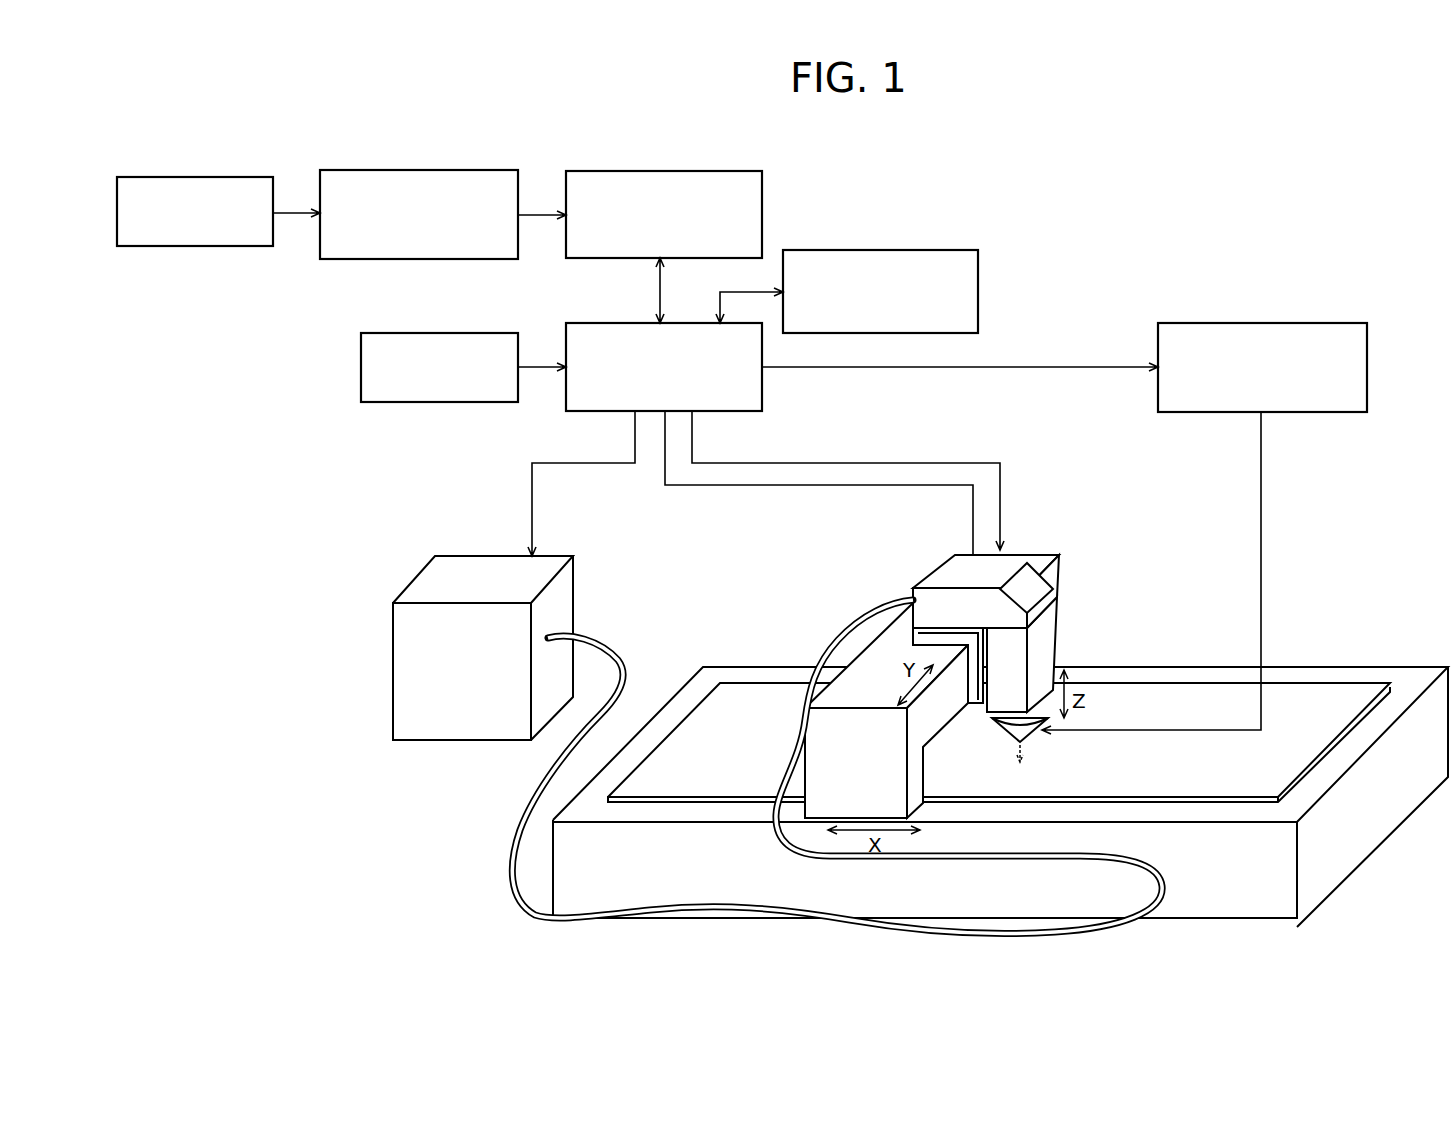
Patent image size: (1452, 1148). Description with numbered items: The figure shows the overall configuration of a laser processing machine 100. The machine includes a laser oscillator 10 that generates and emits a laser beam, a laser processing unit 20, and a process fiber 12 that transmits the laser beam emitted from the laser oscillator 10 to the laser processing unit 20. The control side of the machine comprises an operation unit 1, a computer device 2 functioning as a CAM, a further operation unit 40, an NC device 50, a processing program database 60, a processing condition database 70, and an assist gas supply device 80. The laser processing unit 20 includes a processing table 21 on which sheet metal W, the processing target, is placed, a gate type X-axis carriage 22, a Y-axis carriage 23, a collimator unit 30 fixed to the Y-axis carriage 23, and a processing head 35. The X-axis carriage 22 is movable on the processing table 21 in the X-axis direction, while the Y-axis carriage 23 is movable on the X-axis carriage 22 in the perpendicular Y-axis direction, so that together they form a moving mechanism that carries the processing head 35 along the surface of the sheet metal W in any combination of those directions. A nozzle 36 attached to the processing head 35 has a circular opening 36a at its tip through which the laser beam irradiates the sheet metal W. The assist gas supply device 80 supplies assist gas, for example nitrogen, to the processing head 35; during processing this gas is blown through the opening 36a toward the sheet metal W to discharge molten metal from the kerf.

The operation unit 1 is at (205, 177).
The computer device 2 is at (422, 170).
The laser oscillator 10 is at (490, 565).
The process fiber 12 is at (513, 882).
The laser processing unit 20 is at (1147, 668).
The processing table 21 is at (1302, 678).
The X-axis carriage 22 is at (1062, 580).
The Y-axis carriage 23 is at (972, 688).
The collimator unit 30 is at (998, 669).
The processing head 35 is at (1045, 648).
The nozzle 36 is at (1030, 731).
The opening 36a is at (1023, 745).
The operation unit 40 is at (454, 333).
The NC device 50 is at (607, 323).
The processing program database 60 is at (664, 171).
The processing condition database 70 is at (885, 250).
The assist gas supply device 80 is at (1264, 323).
The laser processing machine 100 is at (1091, 233).
The sheet metal W is at (1205, 697).